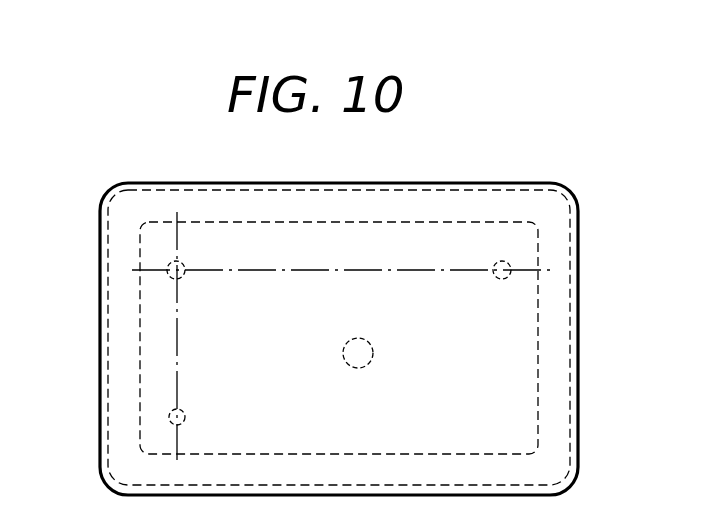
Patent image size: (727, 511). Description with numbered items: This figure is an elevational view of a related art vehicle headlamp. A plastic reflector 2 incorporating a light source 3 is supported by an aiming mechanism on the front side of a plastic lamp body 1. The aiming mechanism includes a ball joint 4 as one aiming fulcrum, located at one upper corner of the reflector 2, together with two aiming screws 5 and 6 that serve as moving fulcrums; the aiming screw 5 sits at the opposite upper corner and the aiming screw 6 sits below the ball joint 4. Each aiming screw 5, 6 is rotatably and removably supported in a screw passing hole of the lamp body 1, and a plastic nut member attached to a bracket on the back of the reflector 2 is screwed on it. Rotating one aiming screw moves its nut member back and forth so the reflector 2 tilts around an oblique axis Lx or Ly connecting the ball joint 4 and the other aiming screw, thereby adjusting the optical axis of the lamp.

The lamp body 1 is at (585, 388).
The plastic reflector 2 is at (254, 222).
The light source 3 is at (373, 352).
The ball joint 4 is at (170, 264).
The aiming screw 5 is at (501, 262).
The aiming screw 6 is at (169, 418).
The oblique axis Lx is at (366, 270).
The oblique axis Ly is at (176, 335).